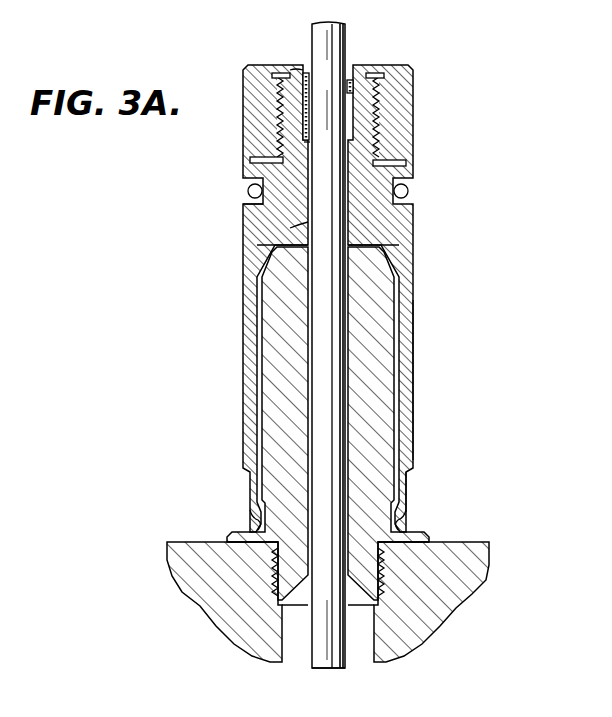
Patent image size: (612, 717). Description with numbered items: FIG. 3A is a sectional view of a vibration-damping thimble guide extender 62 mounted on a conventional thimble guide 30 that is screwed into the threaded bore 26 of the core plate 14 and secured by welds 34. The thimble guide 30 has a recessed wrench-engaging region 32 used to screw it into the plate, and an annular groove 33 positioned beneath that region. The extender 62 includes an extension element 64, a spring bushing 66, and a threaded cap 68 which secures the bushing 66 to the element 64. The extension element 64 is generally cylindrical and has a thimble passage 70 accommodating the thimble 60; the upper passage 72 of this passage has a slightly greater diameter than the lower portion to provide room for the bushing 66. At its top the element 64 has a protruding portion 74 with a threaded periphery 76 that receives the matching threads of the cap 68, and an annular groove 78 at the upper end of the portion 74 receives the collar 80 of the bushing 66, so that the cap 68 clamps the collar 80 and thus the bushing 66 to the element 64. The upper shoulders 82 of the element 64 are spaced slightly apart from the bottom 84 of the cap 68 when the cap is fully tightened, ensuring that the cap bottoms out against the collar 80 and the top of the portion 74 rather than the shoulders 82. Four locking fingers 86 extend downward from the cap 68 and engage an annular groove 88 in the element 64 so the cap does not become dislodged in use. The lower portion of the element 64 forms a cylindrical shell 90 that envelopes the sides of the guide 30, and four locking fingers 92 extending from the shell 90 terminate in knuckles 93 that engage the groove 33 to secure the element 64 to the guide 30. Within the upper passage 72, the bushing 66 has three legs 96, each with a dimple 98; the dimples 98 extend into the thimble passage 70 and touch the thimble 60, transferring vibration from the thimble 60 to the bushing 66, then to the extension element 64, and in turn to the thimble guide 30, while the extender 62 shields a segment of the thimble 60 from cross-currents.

The core plate 14 is at (490, 580).
The bore 26 is at (290, 655).
The thimble guide 30 is at (268, 392).
The recessed wrench-engaging region 32 is at (262, 494).
The annular groove 33 is at (415, 562).
The welds 34 is at (420, 542).
The thimble 60 is at (346, 664).
The vibration-damping thimble guide extender 62 is at (531, 128).
The extension element 64 is at (398, 242).
The spring bushing 66 is at (356, 90).
The threaded cap 68 is at (252, 118).
The thimble passage 70 is at (300, 226).
The upper passage 72 is at (342, 82).
The protruding portion 74 is at (392, 115).
The threaded periphery 76 is at (272, 160).
The annular groove 78 is at (292, 78).
The collar 80 is at (352, 85).
The upper shoulders 82 is at (408, 189).
The bottom 84 is at (406, 163).
The locking fingers 86 is at (250, 190).
The annular groove 88 is at (244, 207).
The cylindrical shell 90 is at (414, 350).
The locking fingers 92 is at (414, 484).
The knuckles 93 is at (404, 523).
The legs 96 is at (308, 128).
The dimple 98 is at (309, 106).